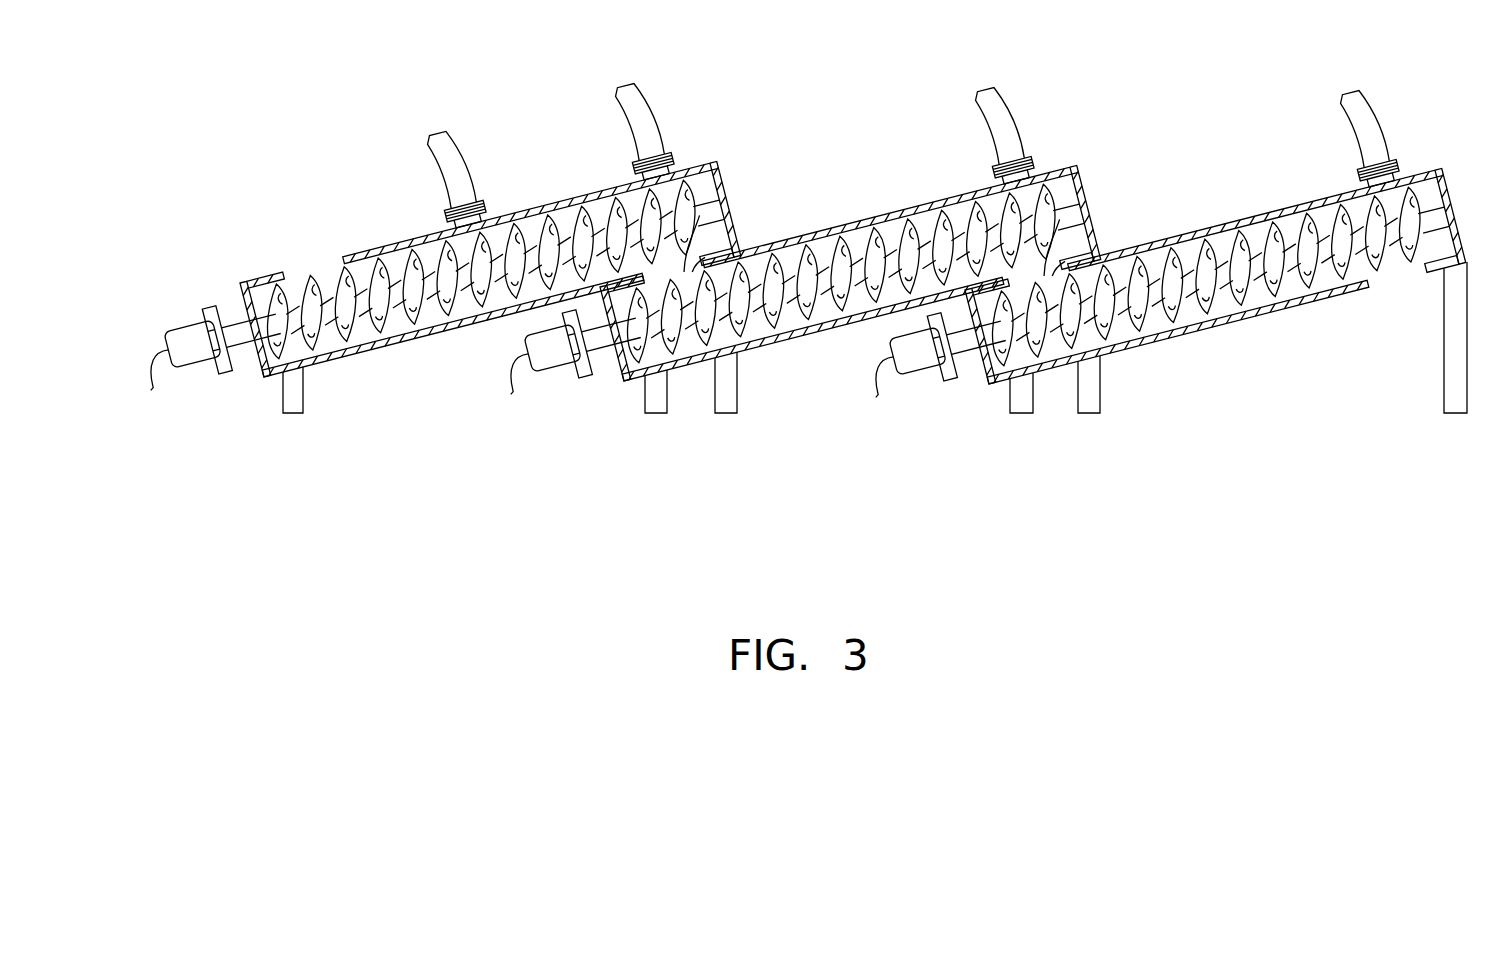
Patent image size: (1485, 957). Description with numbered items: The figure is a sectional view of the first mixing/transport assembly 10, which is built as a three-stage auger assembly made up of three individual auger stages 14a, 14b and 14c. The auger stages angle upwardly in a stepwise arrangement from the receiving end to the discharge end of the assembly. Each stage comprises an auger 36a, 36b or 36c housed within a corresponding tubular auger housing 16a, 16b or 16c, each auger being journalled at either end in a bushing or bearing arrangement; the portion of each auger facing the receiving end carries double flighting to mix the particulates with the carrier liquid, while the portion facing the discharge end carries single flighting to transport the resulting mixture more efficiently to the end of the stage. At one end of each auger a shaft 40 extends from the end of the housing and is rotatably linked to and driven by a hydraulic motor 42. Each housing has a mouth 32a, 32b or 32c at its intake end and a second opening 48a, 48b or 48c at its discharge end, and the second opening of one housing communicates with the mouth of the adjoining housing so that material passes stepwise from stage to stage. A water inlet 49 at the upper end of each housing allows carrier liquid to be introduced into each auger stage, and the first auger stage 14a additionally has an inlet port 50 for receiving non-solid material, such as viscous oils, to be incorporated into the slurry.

The screw conveyor apparatus 10 is at (438, 337).
The first auger stage 14a is at (587, 197).
The second auger stage 14b is at (950, 200).
The third auger stage 14c is at (1268, 213).
The tubular auger housing 16a is at (368, 355).
The tubular auger housing 16b is at (767, 343).
The tubular auger housing 16c is at (1193, 335).
The mouth 32a is at (293, 273).
The mouth 32b is at (698, 263).
The mouth 32c is at (1063, 260).
The auger 36a is at (370, 263).
The auger 36b is at (830, 313).
The auger 36c is at (1273, 297).
The shaft 40 is at (237, 340).
The hydraulic motor 42 is at (192, 353).
The second opening 48a is at (700, 258).
The second opening 48b is at (1043, 263).
The second opening 48c is at (1390, 280).
The water inlet 49 is at (667, 163).
The inlet port 50 is at (488, 227).